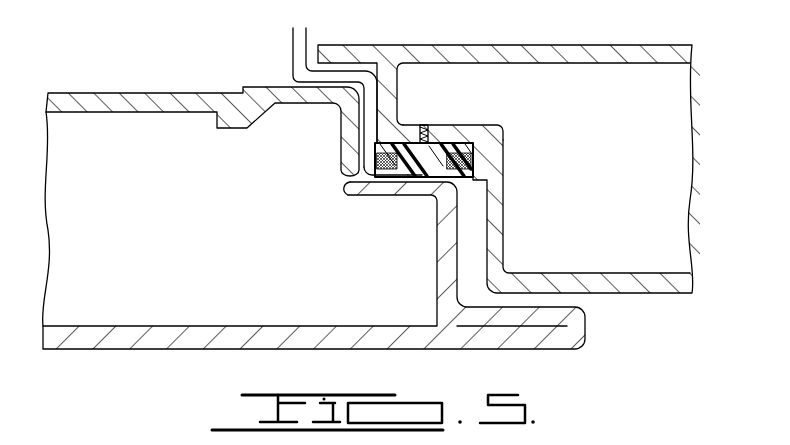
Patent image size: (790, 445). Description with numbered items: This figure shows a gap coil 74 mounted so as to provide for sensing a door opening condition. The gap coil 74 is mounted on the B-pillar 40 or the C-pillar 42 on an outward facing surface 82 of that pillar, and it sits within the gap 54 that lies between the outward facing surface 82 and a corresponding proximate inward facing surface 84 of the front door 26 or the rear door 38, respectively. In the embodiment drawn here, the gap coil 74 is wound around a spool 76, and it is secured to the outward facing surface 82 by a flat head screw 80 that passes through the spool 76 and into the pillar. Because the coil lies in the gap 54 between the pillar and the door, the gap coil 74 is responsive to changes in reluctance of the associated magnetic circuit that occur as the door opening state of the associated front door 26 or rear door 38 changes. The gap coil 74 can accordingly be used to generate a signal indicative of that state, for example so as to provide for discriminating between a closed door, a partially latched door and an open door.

The front door 26 is at (210, 177).
The rear door 38 is at (343, 172).
The B-pillar 40 is at (509, 169).
The C-pillar 42 is at (507, 152).
The gap 54 is at (324, 265).
The gap coil 74 is at (505, 130).
The spool 76 is at (470, 174).
The sealing lip 80 is at (369, 225).
The outward facing surface 82 is at (458, 141).
The inward facing surface 84 is at (345, 186).